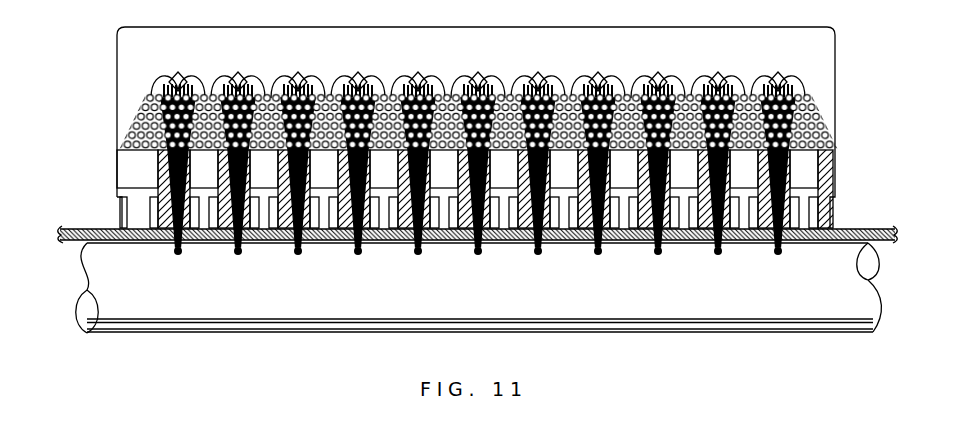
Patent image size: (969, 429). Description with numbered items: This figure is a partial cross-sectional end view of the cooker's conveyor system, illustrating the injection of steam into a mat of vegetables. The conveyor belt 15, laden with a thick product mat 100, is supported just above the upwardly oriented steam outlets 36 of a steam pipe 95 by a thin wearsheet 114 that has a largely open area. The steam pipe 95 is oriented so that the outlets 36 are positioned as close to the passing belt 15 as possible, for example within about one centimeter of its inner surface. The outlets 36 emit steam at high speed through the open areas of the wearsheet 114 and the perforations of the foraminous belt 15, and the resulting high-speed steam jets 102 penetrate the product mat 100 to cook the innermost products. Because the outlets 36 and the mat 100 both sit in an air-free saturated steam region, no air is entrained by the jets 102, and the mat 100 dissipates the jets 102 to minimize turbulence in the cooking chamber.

The product mat 100 is at (137, 117).
The steam jets 102 is at (157, 155).
The wearsheet 114 is at (102, 228).
The conveyor belt 15 is at (837, 197).
The steam outlets 36 is at (778, 256).
The steam pipe 95 is at (148, 300).